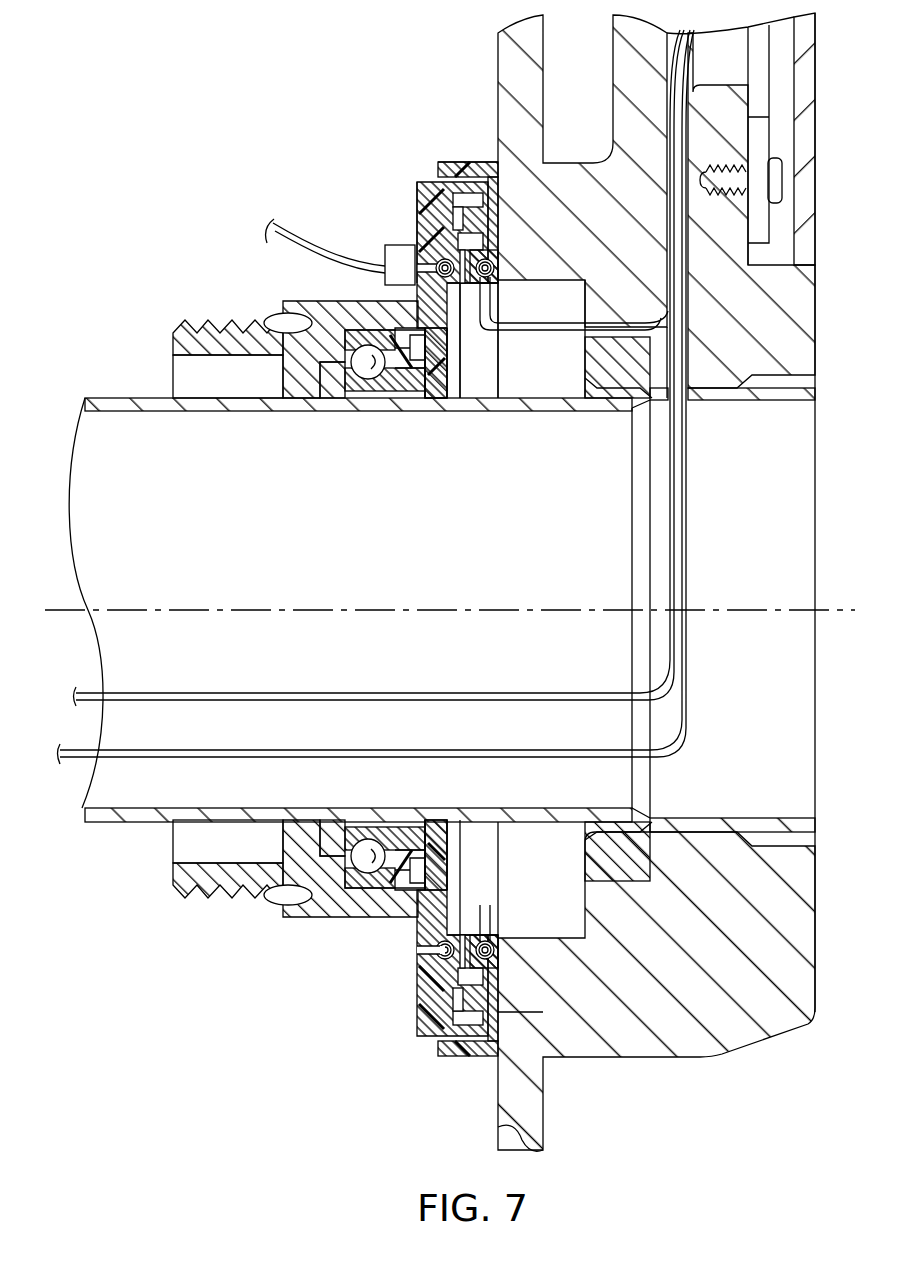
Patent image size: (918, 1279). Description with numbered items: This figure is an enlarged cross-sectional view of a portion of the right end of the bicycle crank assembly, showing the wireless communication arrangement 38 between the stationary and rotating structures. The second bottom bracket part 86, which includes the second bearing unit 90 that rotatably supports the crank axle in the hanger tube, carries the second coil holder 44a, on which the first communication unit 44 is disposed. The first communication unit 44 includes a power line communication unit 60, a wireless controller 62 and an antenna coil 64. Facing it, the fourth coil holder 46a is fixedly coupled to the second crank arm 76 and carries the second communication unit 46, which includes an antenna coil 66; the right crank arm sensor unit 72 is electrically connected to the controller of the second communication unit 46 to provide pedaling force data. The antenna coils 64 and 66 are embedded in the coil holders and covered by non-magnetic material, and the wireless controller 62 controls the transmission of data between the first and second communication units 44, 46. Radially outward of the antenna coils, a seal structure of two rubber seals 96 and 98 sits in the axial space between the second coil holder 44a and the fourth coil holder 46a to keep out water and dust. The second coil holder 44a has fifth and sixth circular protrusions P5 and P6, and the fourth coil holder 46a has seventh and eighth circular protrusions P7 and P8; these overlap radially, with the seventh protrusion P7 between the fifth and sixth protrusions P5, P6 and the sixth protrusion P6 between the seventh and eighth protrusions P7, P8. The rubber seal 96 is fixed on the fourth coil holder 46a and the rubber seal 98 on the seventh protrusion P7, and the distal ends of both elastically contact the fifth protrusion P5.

The wireless communication arrangement 38 is at (383, 115).
The first communication unit 44 is at (405, 193).
The second coil holder 44a is at (417, 203).
The second communication unit 46 is at (445, 157).
The fourth coil holder 46a is at (472, 162).
The power line communication unit 60 is at (360, 251).
The wireless controller 62 is at (397, 245).
The antenna coil 64 is at (460, 280).
The antenna coil 66 is at (493, 273).
The right crank arm sensor unit 72 is at (769, 134).
The second crank arm 76 is at (817, 72).
The second bottom bracket part 86 is at (320, 298).
The second bearing unit 90 is at (362, 403).
The rubber seal 96 is at (487, 975).
The rubber seal 98 is at (470, 990).
The fifth circular protrusion P5 is at (553, 990).
The sixth circular protrusion P6 is at (483, 1027).
The seventh circular protrusion P7 is at (463, 1006).
The eighth circular protrusion P8 is at (438, 1047).